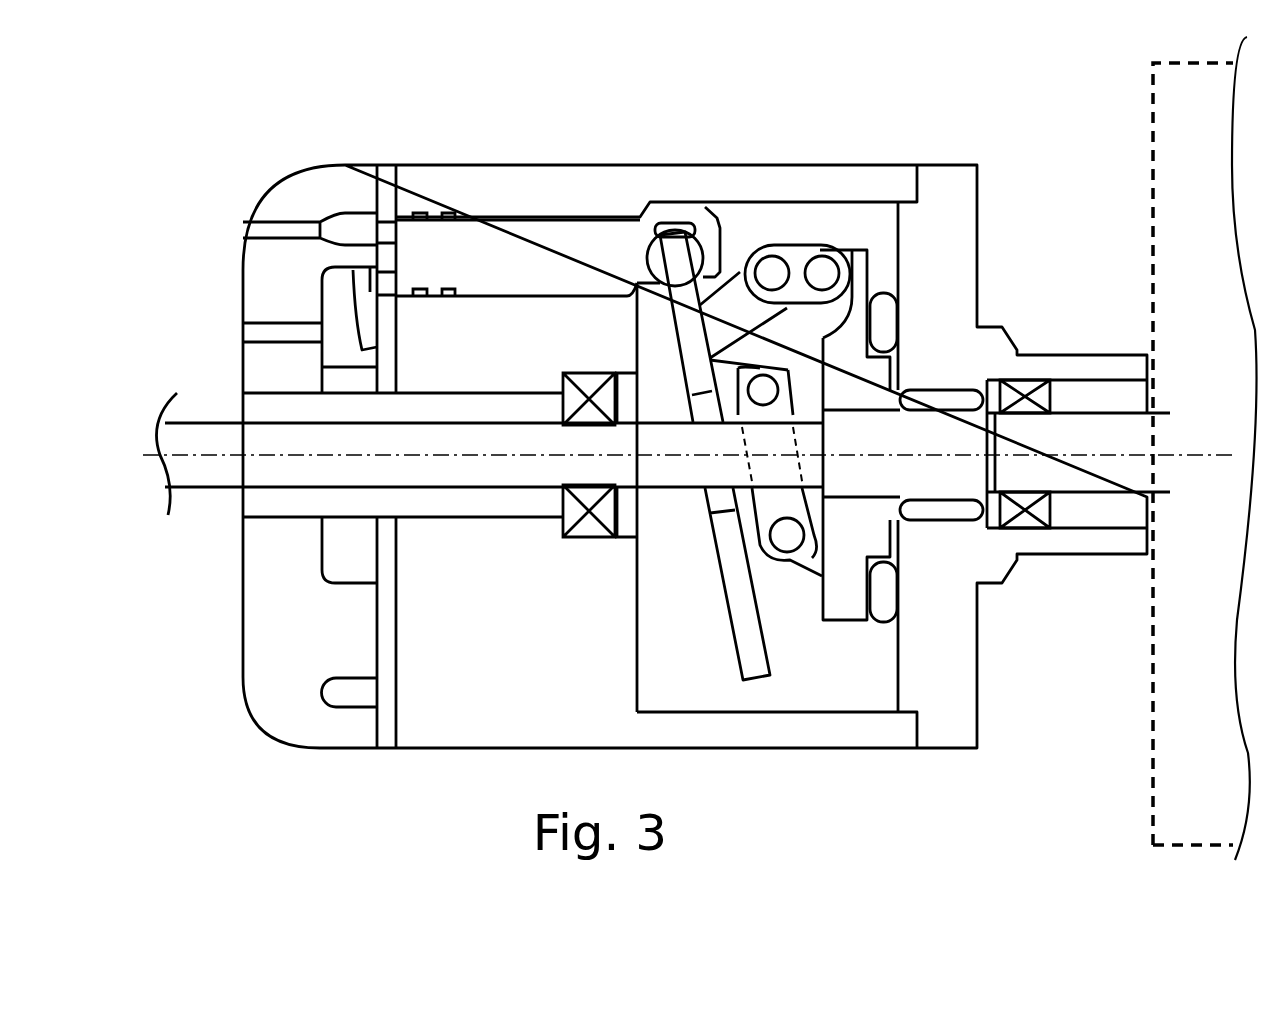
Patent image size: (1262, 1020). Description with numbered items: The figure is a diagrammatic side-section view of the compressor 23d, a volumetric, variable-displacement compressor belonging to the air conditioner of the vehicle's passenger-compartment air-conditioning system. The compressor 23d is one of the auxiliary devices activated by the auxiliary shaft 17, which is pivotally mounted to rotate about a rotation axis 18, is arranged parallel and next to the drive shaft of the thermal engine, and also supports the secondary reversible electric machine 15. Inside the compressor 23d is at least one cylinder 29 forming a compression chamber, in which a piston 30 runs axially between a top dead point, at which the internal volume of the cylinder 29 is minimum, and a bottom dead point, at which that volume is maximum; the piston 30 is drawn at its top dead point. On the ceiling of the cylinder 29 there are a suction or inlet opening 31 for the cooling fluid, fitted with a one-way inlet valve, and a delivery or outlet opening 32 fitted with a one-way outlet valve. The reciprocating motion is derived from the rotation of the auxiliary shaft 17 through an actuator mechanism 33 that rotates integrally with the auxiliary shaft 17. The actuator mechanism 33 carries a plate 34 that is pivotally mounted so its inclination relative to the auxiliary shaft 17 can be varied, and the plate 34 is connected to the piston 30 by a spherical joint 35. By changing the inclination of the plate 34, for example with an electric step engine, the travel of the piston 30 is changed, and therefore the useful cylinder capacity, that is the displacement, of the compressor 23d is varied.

The secondary reversible electric machine 15 is at (1163, 802).
The auxiliary shaft 17 is at (190, 475).
The rotation axis 18 is at (210, 450).
The compressor 23d is at (1012, 118).
The cylinder 29 is at (404, 297).
The piston 30 is at (458, 247).
The suction or inlet opening 31 is at (270, 230).
The delivery or outlet opening 32 is at (273, 333).
The actuator mechanism 33 is at (806, 238).
The plate 34 is at (750, 657).
The spherical joint 35 is at (698, 258).